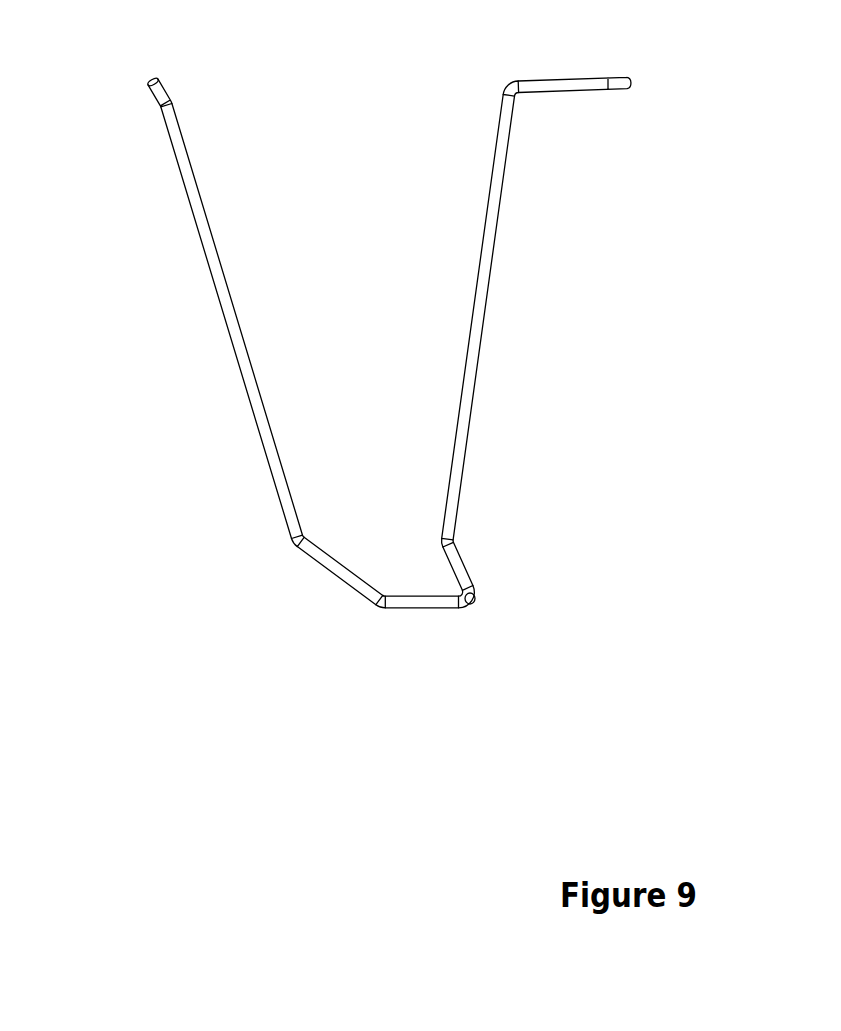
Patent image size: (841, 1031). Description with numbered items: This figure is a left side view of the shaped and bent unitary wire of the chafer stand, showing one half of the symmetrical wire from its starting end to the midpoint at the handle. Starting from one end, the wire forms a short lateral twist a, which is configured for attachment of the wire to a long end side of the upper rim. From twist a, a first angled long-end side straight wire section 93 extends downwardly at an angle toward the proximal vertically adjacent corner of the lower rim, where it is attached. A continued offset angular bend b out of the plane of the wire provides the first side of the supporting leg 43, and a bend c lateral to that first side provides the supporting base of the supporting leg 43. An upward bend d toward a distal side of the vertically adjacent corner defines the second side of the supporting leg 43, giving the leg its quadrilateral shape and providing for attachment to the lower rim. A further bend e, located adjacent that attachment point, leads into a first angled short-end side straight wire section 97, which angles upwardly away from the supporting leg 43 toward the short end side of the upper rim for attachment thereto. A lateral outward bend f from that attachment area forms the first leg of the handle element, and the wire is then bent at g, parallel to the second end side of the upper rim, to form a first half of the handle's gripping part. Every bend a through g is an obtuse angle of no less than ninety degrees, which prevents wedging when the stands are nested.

The short lateral twist a is at (167, 113).
The offset angular bend b is at (302, 542).
The lateral bend c is at (373, 605).
The upward bend d is at (477, 603).
The bend e is at (450, 540).
The lateral outward bend f is at (510, 88).
The bend g is at (628, 82).
The first angled long-end side straight wire section 93 is at (228, 313).
The first angled short-end side straight wire section 97 is at (485, 268).
The supporting leg 43 is at (425, 598).